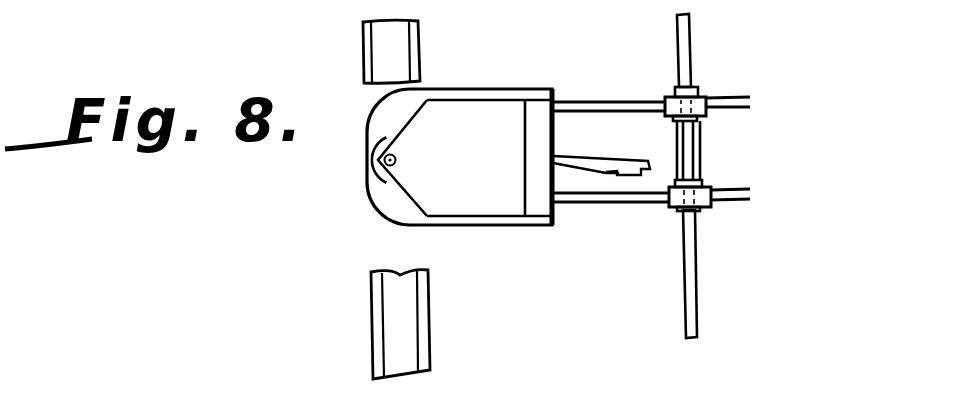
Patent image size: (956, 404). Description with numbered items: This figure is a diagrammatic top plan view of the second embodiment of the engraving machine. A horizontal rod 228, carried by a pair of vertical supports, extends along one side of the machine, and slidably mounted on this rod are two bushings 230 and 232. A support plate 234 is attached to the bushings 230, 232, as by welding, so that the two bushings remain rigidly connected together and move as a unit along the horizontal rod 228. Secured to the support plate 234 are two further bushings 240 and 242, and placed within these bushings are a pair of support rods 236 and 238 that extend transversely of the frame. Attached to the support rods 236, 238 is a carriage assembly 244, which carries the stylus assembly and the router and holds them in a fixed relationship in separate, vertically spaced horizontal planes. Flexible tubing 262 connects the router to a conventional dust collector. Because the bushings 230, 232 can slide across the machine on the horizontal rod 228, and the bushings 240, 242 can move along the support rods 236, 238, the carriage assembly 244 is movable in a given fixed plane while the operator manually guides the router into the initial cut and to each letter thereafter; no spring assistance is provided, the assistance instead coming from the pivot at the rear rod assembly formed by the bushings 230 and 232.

The horizontal rod 228 is at (697, 295).
The bushing 230 is at (700, 212).
The bushing 232 is at (676, 88).
The support plate 234 is at (698, 140).
The support rod 236 is at (612, 208).
The support rod 238 is at (592, 102).
The bushing 240 is at (704, 189).
The bushing 242 is at (703, 97).
The carriage assembly 244 is at (502, 167).
The flexible tubing 262 is at (596, 168).